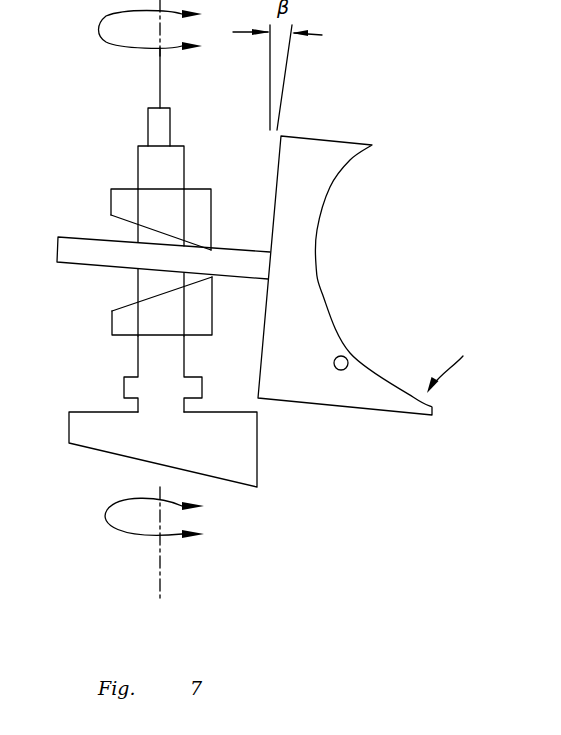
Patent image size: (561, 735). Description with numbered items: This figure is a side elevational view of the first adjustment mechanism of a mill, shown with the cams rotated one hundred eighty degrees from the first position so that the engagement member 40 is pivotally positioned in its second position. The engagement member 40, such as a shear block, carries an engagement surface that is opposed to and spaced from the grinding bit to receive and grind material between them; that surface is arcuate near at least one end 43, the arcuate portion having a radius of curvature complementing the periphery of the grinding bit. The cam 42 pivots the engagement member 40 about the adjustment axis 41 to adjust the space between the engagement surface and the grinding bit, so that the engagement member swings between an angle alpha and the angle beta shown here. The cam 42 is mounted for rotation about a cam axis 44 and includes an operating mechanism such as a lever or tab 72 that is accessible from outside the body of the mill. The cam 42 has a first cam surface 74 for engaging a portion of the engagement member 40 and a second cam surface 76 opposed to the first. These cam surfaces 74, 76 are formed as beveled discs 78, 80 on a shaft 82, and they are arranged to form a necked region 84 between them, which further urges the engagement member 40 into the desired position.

The engagement member 40 is at (317, 267).
The adjustment axis 41 is at (347, 357).
The cam 42 is at (76, 124).
The end 43 is at (458, 366).
The cam axis 44 is at (160, 75).
The lever or tab 72 is at (257, 470).
The first cam surface 74 is at (126, 217).
The second cam surface 76 is at (114, 312).
The beveled disc 78 is at (212, 218).
The beveled disc 80 is at (212, 318).
The shaft 82 is at (185, 352).
The necked region 84 is at (188, 263).